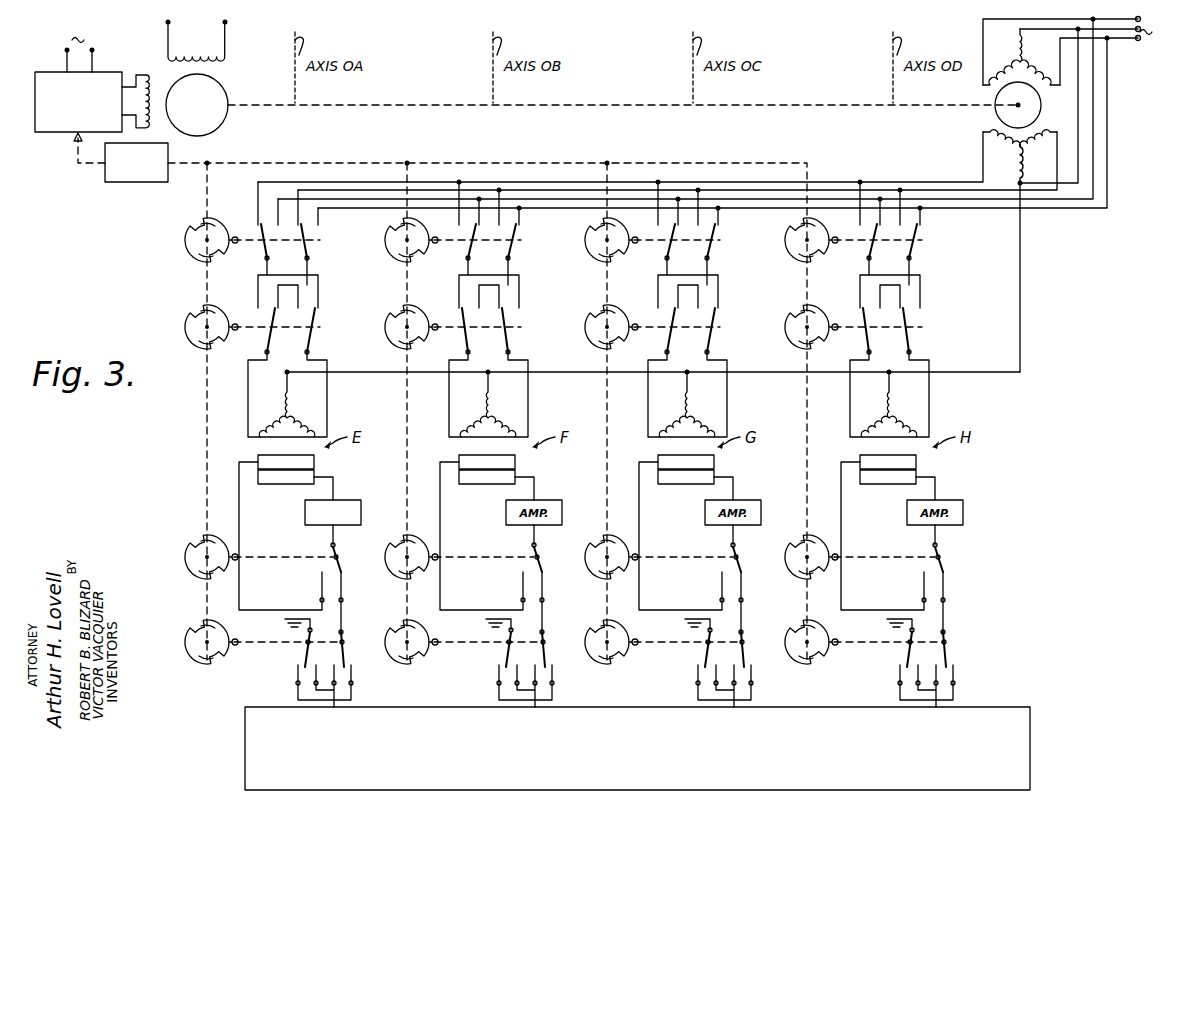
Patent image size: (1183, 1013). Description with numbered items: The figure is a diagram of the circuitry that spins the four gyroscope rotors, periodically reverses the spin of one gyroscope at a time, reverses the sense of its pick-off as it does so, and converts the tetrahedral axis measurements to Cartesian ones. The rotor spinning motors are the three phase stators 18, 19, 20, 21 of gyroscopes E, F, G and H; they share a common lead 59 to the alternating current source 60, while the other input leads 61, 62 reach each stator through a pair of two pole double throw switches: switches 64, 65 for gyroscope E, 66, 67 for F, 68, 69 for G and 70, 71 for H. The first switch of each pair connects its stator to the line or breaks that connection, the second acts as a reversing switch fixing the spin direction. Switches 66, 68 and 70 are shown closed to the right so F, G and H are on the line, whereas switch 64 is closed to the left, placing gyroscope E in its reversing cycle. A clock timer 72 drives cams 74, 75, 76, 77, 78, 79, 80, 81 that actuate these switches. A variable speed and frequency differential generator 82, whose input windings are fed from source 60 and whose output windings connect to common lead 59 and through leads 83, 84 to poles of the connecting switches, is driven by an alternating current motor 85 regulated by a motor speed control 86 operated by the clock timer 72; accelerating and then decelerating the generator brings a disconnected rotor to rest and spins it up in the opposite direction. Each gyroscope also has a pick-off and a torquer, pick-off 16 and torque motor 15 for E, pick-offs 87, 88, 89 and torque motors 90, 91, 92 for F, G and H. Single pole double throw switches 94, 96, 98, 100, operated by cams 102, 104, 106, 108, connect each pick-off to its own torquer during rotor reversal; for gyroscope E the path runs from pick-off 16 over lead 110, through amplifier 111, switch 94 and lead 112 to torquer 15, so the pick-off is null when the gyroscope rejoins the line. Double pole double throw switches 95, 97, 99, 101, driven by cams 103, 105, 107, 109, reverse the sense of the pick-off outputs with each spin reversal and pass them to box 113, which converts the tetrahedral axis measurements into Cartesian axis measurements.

The torque motor 15 is at (314, 462).
The pick-off 16 is at (272, 486).
The three phase stator 18 is at (260, 430).
The three phase stator 19 is at (523, 428).
The three phase stator 20 is at (660, 430).
The three phase stator 21 is at (921, 427).
The common lead 59 is at (1085, 152).
The source of alternating current electrical energy 60 is at (1150, 45).
The input lead 61 is at (1094, 90).
The input lead 62 is at (1106, 113).
The two pole double throw switch 64 is at (316, 240).
The two pole double throw switch 65 is at (312, 329).
The two pole double throw switch 66 is at (520, 246).
The two pole double throw switch 67 is at (520, 304).
The two pole double throw switch 68 is at (718, 246).
The two pole double throw switch 69 is at (718, 328).
The two pole double throw switch 70 is at (926, 246).
The two pole double throw switch 71 is at (920, 337).
The clock timer 72 is at (140, 183).
The cam element 74 is at (184, 240).
The cam element 75 is at (184, 327).
The cam element 76 is at (390, 252).
The cam element 77 is at (394, 318).
The cam element 78 is at (586, 242).
The cam element 79 is at (586, 328).
The cam element 80 is at (792, 246).
The cam element 81 is at (786, 328).
The differential generator 82 is at (995, 108).
The lead 83 is at (258, 190).
The lead 84 is at (420, 190).
The alternating current electric motor 85 is at (226, 118).
The motor speed control 86 is at (113, 72).
The pick-off 87 is at (472, 486).
The pick-off 88 is at (672, 486).
The pick-off 89 is at (876, 486).
The torque motor 90 is at (517, 463).
The torque motor 91 is at (714, 463).
The torque motor 92 is at (916, 462).
The single pole double throw switch 94 is at (355, 566).
The double pole double throw switch 95 is at (345, 644).
The single pole double throw switch 96 is at (542, 567).
The double pole double throw switch 97 is at (546, 650).
The single pole double throw switch 98 is at (742, 567).
The double pole double throw switch 99 is at (744, 658).
The single pole double throw switch 100 is at (950, 564).
The double pole double throw switch 101 is at (954, 642).
The cam 102 is at (184, 557).
The cam 103 is at (184, 642).
The cam 104 is at (410, 536).
The cam 105 is at (397, 662).
The cam 106 is at (608, 536).
The cam 107 is at (618, 610).
The cam 108 is at (794, 570).
The clock timer driven cam 109 is at (800, 666).
The lead 110 is at (333, 480).
The amplifier 111 is at (361, 513).
The lead 112 is at (239, 504).
The box 113 is at (1030, 740).